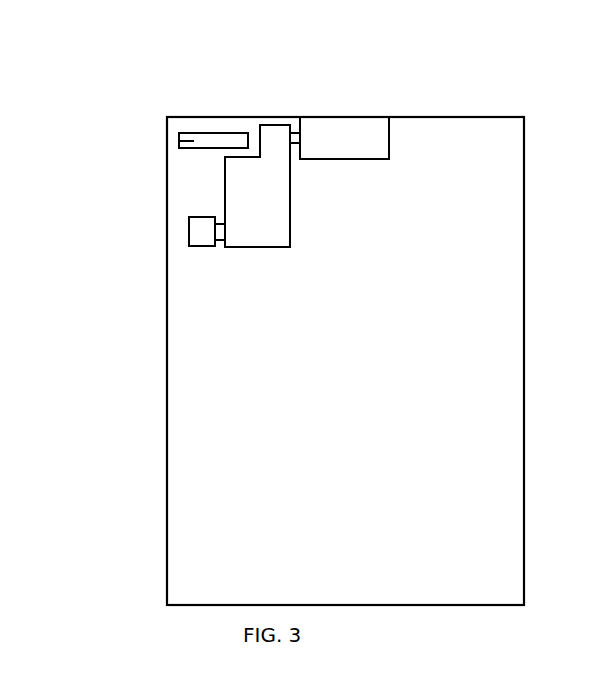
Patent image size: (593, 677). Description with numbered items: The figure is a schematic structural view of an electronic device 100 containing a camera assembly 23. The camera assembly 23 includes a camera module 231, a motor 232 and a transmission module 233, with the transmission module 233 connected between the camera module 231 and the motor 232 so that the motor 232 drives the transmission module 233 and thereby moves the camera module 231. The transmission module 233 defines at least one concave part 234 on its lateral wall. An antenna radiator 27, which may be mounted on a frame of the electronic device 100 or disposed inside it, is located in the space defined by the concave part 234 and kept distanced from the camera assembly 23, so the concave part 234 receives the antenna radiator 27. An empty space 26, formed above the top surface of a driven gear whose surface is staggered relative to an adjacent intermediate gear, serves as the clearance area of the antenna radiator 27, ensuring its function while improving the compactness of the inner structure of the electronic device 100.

The electronic device 100 is at (346, 68).
The empty space 26 is at (232, 128).
The antenna radiator 27 is at (193, 142).
The concave part 234 is at (254, 142).
The camera assembly 23 is at (79, 213).
The motor 232 is at (205, 232).
The transmission module 233 is at (252, 215).
The camera module 231 is at (347, 143).